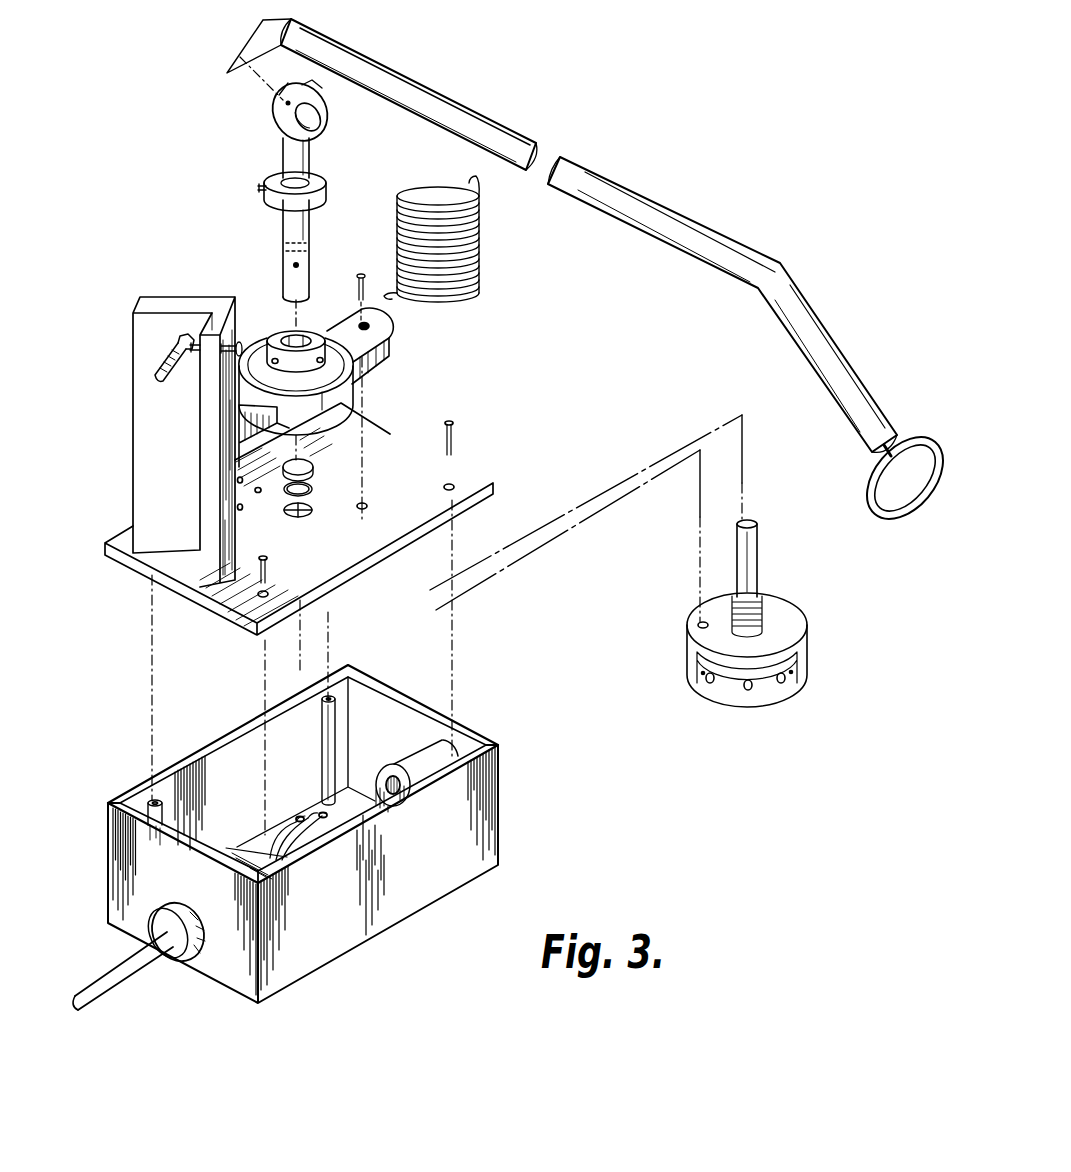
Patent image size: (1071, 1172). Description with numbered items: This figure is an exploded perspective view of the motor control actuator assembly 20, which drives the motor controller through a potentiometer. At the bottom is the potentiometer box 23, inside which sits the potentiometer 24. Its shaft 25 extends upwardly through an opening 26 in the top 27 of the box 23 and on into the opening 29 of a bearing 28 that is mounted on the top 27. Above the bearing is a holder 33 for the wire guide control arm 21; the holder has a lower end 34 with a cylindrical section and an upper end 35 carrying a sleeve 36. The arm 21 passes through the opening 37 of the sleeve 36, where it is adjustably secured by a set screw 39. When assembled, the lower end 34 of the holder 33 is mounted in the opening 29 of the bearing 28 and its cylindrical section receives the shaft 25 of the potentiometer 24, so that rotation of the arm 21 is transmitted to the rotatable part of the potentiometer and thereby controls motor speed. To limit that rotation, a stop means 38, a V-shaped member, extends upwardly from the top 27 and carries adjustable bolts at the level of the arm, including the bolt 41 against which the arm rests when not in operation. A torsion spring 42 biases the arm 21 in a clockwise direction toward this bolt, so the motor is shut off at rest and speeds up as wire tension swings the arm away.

The motor control actuator assembly 20 is at (556, 360).
The wire guide control arm 21 is at (385, 84).
The potentiometer box 23 is at (518, 782).
The potentiometer 24 is at (782, 622).
The shaft 25 is at (748, 566).
The opening 26 is at (298, 518).
The top 27 is at (398, 450).
The bearing 28 is at (347, 392).
The opening 29 is at (286, 326).
The holder 33 is at (340, 178).
The lower end 34 is at (306, 230).
The upper end 35 is at (292, 152).
The sleeve 36 is at (297, 84).
The opening 37 is at (321, 119).
The stop means 38 is at (256, 188).
The set screw 39 is at (160, 360).
The adjustable bolt 41 is at (226, 378).
The torsion spring 42 is at (478, 250).